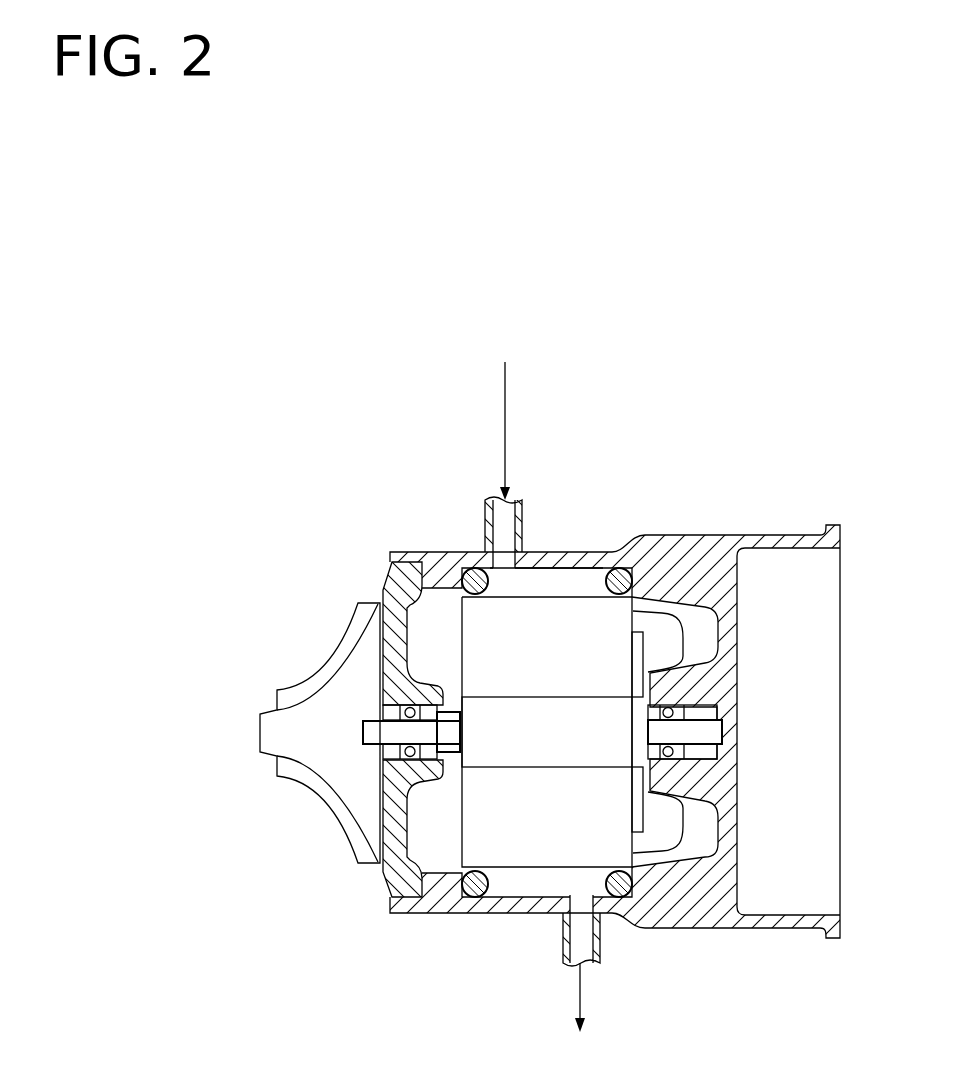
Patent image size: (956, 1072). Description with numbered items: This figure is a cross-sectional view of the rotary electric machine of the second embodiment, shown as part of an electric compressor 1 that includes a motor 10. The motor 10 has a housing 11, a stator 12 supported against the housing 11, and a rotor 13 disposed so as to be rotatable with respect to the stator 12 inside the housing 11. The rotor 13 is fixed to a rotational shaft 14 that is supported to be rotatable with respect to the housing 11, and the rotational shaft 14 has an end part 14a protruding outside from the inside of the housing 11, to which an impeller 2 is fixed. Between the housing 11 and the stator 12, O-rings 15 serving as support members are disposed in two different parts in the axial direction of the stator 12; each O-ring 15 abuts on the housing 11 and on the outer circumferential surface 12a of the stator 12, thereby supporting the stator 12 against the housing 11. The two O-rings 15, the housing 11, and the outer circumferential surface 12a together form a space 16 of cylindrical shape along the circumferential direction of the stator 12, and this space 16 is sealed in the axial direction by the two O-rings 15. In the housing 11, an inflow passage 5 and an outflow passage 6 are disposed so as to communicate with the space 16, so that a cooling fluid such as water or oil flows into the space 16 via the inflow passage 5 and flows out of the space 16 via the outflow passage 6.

The electric compressor 1 is at (236, 317).
The impeller 2 is at (294, 683).
The inflow passage 5 is at (486, 548).
The outflow passage 6 is at (603, 940).
The motor 10 is at (416, 484).
The housing 11 is at (477, 914).
The stator 12 is at (547, 623).
The outer circumferential surface 12a is at (593, 596).
The rotor 13 is at (527, 740).
The rotational shaft 14 is at (428, 735).
The end part 14a is at (363, 733).
The O-ring 15 is at (469, 570).
The space 16 is at (567, 580).